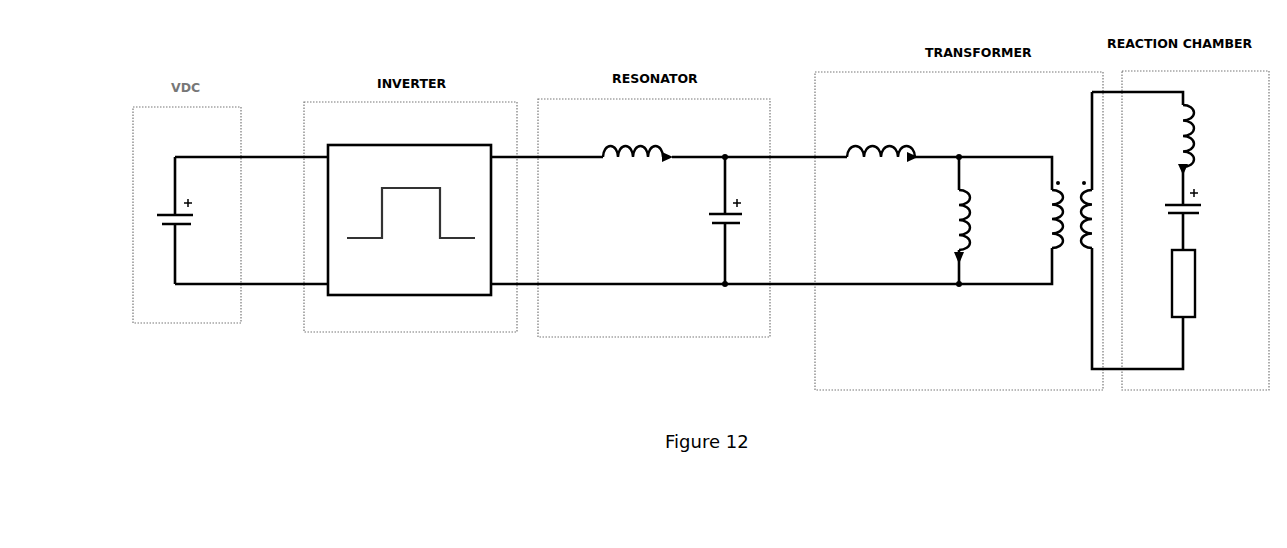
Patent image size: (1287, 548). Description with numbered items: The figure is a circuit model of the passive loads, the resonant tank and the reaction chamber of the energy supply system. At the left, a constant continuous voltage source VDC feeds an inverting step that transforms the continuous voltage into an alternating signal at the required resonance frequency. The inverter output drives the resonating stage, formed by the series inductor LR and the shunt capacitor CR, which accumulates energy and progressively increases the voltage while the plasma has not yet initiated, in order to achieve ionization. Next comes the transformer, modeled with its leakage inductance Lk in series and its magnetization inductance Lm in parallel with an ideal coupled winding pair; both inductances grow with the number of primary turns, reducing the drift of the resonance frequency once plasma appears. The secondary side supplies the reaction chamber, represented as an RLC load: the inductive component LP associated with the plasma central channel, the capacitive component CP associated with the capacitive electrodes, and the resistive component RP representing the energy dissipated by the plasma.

The constant continuous voltage source VDC is at (178, 182).
The resonator inductor LR is at (638, 140).
The resonator capacitor CR is at (705, 220).
The leakage inductance Lk is at (882, 139).
The magnetization inductance Lm is at (983, 220).
The inductive component LP is at (1203, 155).
The capacitive component CP is at (1166, 219).
The resistive component RP is at (1199, 283).